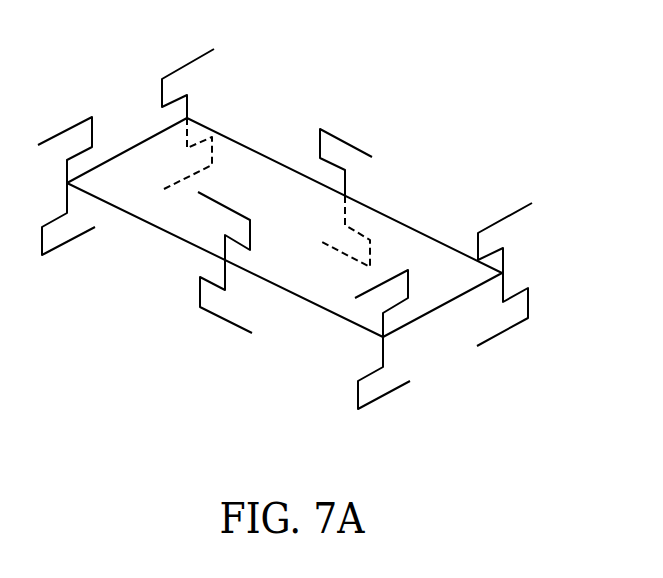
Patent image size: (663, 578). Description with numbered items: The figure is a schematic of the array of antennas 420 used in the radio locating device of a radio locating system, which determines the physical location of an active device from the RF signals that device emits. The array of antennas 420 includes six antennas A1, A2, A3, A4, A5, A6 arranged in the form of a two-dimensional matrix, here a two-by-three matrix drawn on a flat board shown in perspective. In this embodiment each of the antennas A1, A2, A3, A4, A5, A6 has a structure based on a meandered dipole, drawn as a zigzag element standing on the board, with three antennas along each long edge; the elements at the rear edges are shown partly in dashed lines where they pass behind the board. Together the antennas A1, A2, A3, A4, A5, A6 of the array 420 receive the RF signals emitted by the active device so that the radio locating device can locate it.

The array of antennas 420 is at (506, 90).
The antenna A1 is at (190, 63).
The antenna A2 is at (345, 143).
The antenna A3 is at (507, 217).
The antenna A4 is at (68, 242).
The antenna A5 is at (225, 320).
The antenna A6 is at (383, 396).